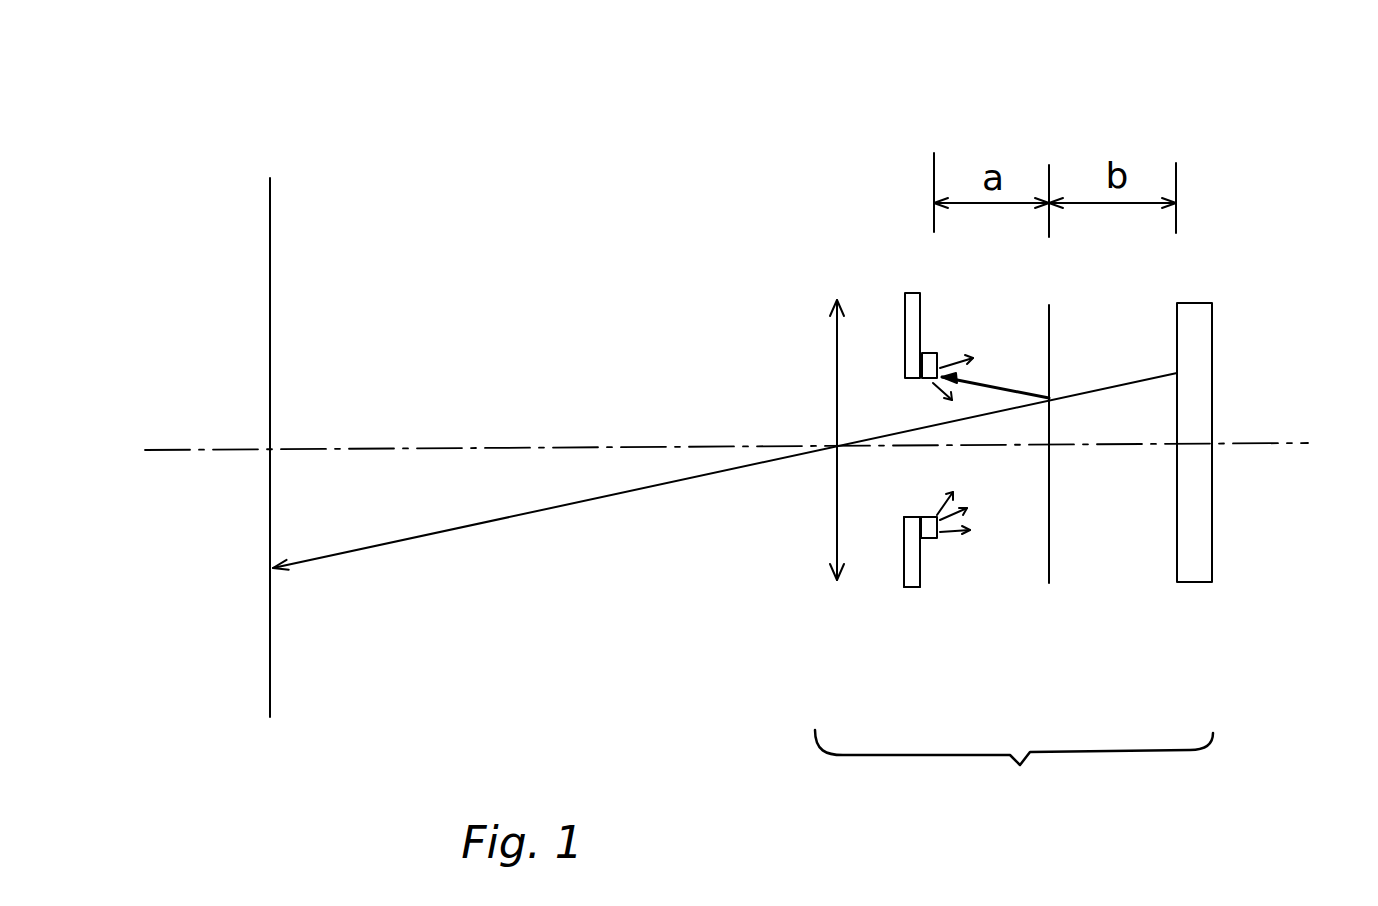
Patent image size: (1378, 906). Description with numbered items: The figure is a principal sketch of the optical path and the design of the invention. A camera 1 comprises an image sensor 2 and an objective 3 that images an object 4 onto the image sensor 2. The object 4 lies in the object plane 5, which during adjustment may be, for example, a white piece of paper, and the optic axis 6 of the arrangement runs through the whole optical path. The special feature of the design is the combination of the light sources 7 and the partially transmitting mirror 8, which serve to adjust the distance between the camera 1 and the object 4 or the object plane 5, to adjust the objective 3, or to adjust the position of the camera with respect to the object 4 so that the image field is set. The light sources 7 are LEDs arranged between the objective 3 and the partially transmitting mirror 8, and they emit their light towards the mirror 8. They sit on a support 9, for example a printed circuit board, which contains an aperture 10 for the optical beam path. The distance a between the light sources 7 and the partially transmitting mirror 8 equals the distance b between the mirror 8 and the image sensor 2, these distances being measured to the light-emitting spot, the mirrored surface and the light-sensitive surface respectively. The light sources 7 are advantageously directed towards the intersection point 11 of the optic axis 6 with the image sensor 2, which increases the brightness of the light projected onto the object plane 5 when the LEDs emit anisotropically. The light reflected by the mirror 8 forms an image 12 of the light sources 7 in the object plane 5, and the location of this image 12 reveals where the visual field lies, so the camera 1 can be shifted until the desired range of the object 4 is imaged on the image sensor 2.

The camera 1 is at (1014, 780).
The image sensor 2 is at (1178, 548).
The objective 3 is at (833, 580).
The object 4 is at (268, 505).
The object plane 5 is at (267, 232).
The optic axis 6 is at (157, 453).
The light sources 7 is at (928, 353).
The partially transmitting mirror 8 is at (1049, 553).
The support 9 is at (917, 575).
The aperture 10 is at (905, 490).
The intersection point 11 is at (1177, 440).
The image of the light sources 12 is at (275, 577).